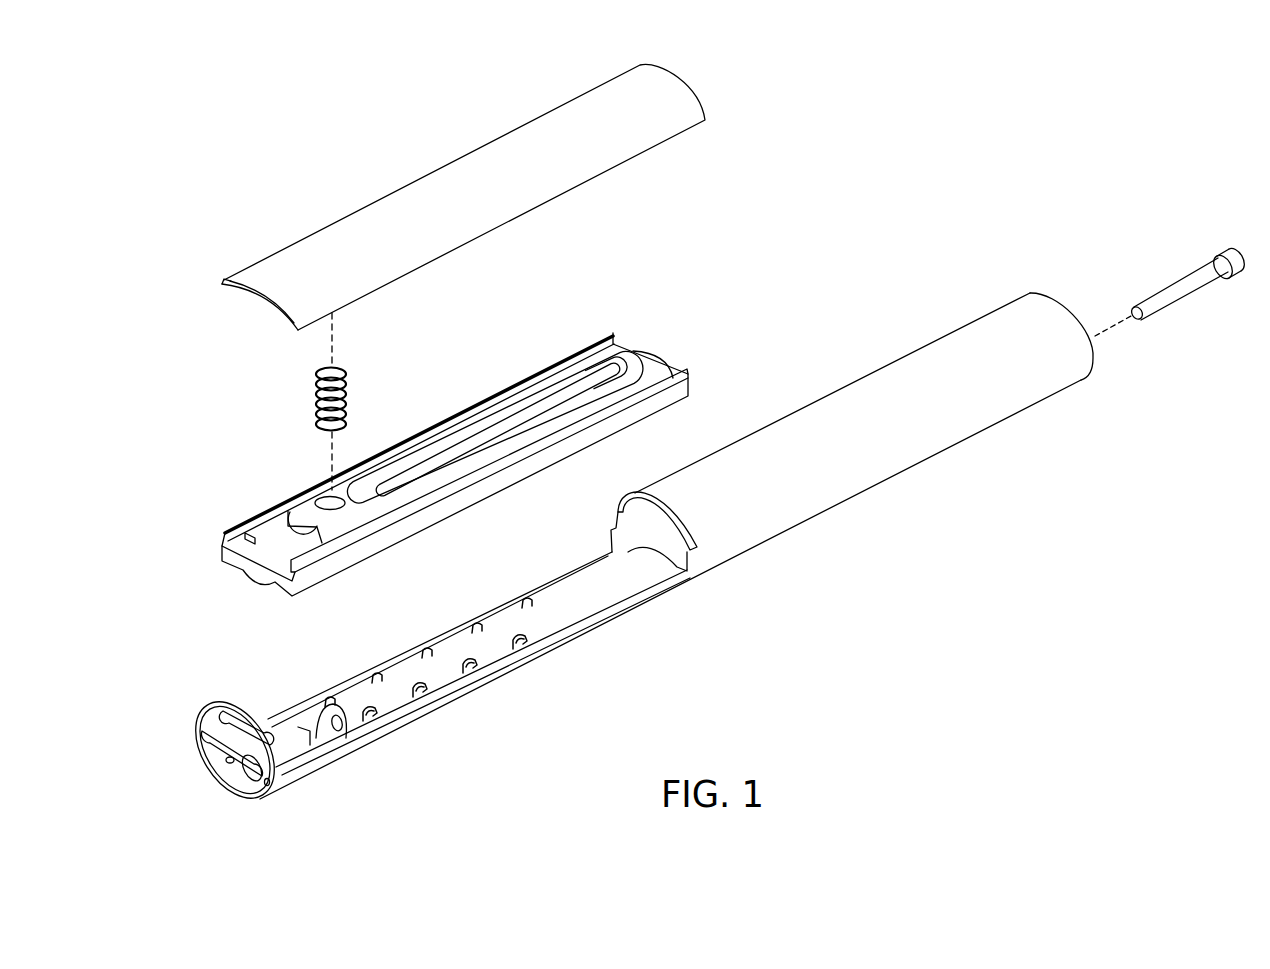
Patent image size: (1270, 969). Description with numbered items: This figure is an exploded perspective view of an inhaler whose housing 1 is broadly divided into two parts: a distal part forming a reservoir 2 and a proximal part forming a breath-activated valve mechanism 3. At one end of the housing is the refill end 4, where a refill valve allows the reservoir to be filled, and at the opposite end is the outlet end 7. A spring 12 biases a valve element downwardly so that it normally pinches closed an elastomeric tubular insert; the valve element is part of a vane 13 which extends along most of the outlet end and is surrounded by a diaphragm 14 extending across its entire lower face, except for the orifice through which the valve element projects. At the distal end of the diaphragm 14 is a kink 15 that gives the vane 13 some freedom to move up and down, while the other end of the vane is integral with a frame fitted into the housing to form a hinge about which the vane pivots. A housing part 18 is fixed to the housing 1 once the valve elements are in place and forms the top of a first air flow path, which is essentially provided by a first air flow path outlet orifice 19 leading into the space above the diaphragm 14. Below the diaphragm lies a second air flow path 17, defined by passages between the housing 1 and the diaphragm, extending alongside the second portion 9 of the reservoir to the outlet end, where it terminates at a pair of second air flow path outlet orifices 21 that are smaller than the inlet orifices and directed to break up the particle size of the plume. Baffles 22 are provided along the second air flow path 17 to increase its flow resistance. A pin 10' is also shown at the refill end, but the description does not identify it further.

The housing 1 is at (677, 535).
The reservoir 2 is at (944, 345).
The breath-activated valve mechanism 3 is at (432, 690).
The refill end 4 is at (1058, 297).
The outlet end 7 is at (248, 773).
The second portion of the reservoir 9 is at (387, 705).
The pin 10' is at (1169, 294).
The spring 12 is at (317, 396).
The vane 13 is at (455, 457).
The diaphragm 14 is at (592, 413).
The kink 15 is at (622, 355).
The second air flow path 17 is at (500, 615).
The housing part 18 is at (474, 150).
The first air flow path outlet orifice 19 is at (242, 723).
The second air flow path outlet orifices 21 is at (227, 760).
The baffles 22 is at (428, 698).